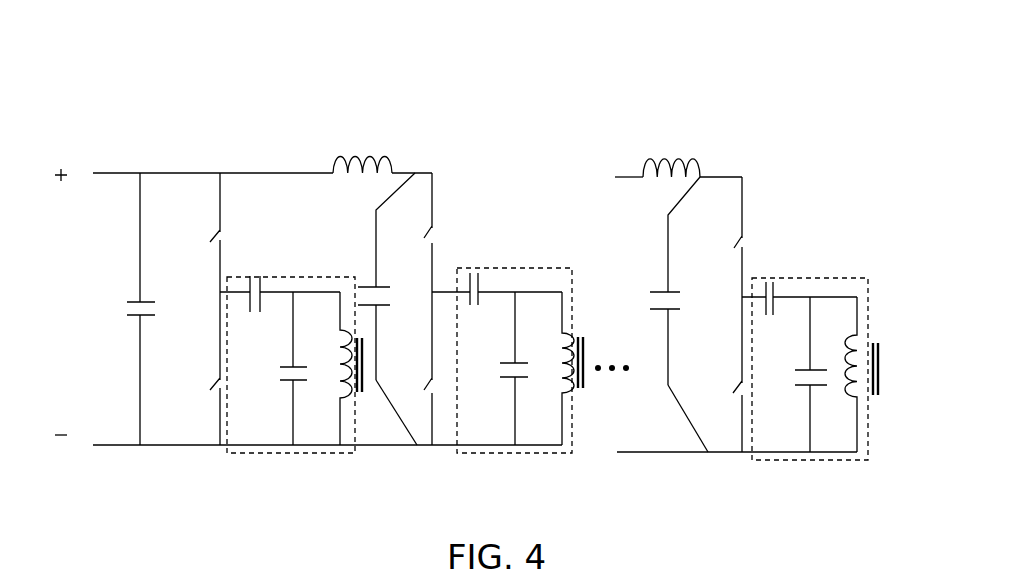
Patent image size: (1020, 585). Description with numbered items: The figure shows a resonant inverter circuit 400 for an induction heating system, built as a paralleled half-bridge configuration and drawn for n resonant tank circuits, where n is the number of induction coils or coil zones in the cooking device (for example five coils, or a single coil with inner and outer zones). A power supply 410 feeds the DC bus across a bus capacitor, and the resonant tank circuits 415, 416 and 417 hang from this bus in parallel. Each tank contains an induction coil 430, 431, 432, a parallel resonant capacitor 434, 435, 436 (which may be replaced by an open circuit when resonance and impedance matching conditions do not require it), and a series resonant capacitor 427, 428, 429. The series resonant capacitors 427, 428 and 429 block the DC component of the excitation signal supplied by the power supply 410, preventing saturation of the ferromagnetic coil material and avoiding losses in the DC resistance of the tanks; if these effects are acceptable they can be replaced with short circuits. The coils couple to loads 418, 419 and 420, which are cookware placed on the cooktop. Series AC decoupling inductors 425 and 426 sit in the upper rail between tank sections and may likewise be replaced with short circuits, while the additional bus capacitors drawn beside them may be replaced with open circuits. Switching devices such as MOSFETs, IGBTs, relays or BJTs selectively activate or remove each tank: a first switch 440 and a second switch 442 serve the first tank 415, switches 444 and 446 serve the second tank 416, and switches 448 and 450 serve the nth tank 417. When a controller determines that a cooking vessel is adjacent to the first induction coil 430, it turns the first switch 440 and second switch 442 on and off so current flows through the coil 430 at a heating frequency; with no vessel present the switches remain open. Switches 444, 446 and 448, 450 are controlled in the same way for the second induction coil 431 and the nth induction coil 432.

The resonant inverter circuit 400 is at (200, 100).
The power supply 410 is at (97, 430).
The resonant tank circuit 415 is at (293, 462).
The resonant tank circuit 416 is at (517, 462).
The resonant tank circuit 417 is at (810, 462).
The load 418 is at (361, 398).
The load 419 is at (589, 342).
The load 420 is at (880, 345).
The AC decoupling inductor 425 is at (399, 163).
The AC decoupling inductor 426 is at (704, 165).
The series resonant capacitor 427 is at (264, 292).
The series resonant capacitor 428 is at (486, 283).
The series resonant capacitor 429 is at (784, 290).
The induction coil 430 is at (335, 358).
The induction coil 431 is at (553, 347).
The induction coil 432 is at (853, 362).
The parallel resonant capacitor 434 is at (290, 363).
The parallel resonant capacitor 435 is at (503, 385).
The nth parallel capacitor CPn 436 is at (800, 392).
The first switch 440 is at (226, 240).
The second switch 442 is at (207, 389).
The switch 444 is at (437, 232).
The switch 446 is at (424, 398).
The switch 448 is at (747, 237).
The switch 450 is at (733, 404).